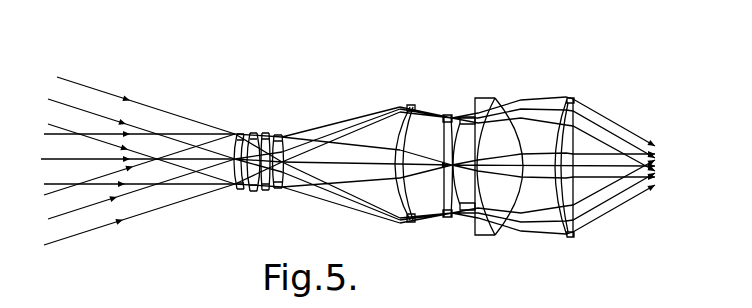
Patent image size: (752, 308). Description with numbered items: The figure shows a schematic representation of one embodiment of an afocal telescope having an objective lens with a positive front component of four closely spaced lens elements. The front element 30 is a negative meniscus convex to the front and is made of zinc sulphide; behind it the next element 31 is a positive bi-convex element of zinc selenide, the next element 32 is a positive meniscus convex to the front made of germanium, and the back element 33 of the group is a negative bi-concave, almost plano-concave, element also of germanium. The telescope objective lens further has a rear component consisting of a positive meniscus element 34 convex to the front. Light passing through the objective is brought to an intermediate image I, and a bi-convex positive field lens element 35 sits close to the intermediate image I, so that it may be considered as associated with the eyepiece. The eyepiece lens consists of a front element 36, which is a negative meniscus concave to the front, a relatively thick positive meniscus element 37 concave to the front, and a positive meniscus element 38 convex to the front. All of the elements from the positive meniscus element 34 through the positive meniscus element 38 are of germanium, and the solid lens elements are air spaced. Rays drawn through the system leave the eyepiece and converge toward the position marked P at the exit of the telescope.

The front element 30 is at (238, 133).
The positive bi-convex element 31 is at (254, 132).
The positive meniscus element 32 is at (267, 132).
The back element 33 is at (280, 134).
The positive meniscus element 34 is at (409, 105).
The field lens element 35 is at (449, 114).
The front element 36 is at (464, 116).
The positive meniscus element 37 is at (480, 98).
The positive meniscus element 38 is at (569, 98).
The intermediate image I is at (454, 217).
The exit pupil P is at (643, 199).